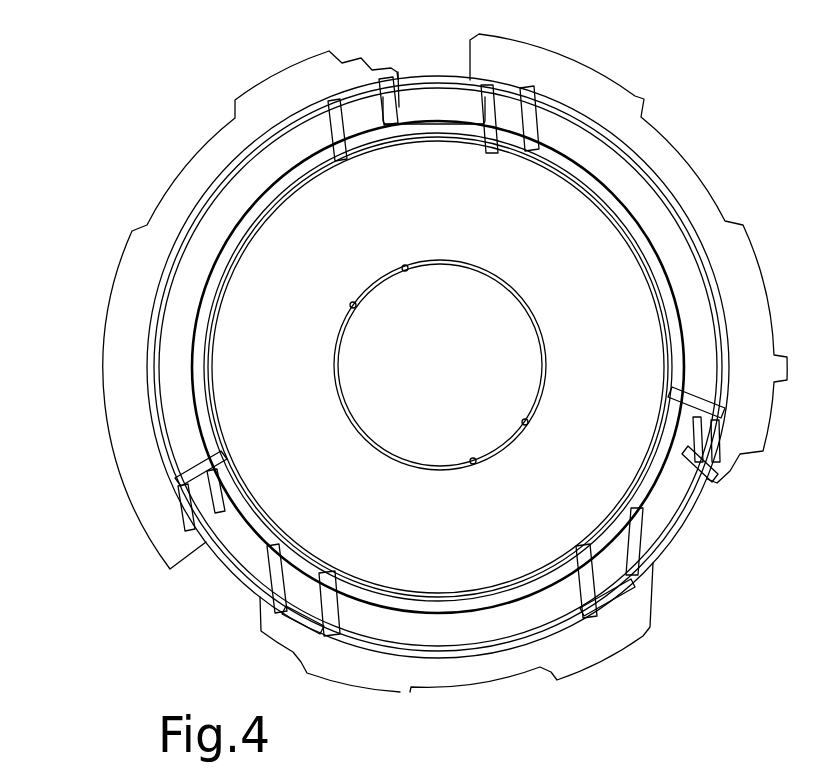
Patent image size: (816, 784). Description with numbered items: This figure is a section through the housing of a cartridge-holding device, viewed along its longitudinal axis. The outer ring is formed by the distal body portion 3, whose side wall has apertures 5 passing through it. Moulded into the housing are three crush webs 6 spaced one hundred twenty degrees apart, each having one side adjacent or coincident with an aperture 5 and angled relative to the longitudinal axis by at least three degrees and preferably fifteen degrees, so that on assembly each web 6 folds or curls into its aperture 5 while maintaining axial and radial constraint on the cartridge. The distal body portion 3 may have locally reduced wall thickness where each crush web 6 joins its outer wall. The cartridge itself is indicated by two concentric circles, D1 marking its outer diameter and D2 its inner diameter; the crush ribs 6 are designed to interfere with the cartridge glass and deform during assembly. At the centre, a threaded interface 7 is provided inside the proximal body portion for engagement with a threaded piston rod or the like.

The distal body portion 3 is at (262, 110).
The aperture 5 is at (448, 62).
The crush web 6 is at (377, 93).
The threaded interface 7 is at (500, 273).
The outer diameter of the cartridge D1 is at (150, 328).
The inner diameter of the cartridge D2 is at (203, 403).